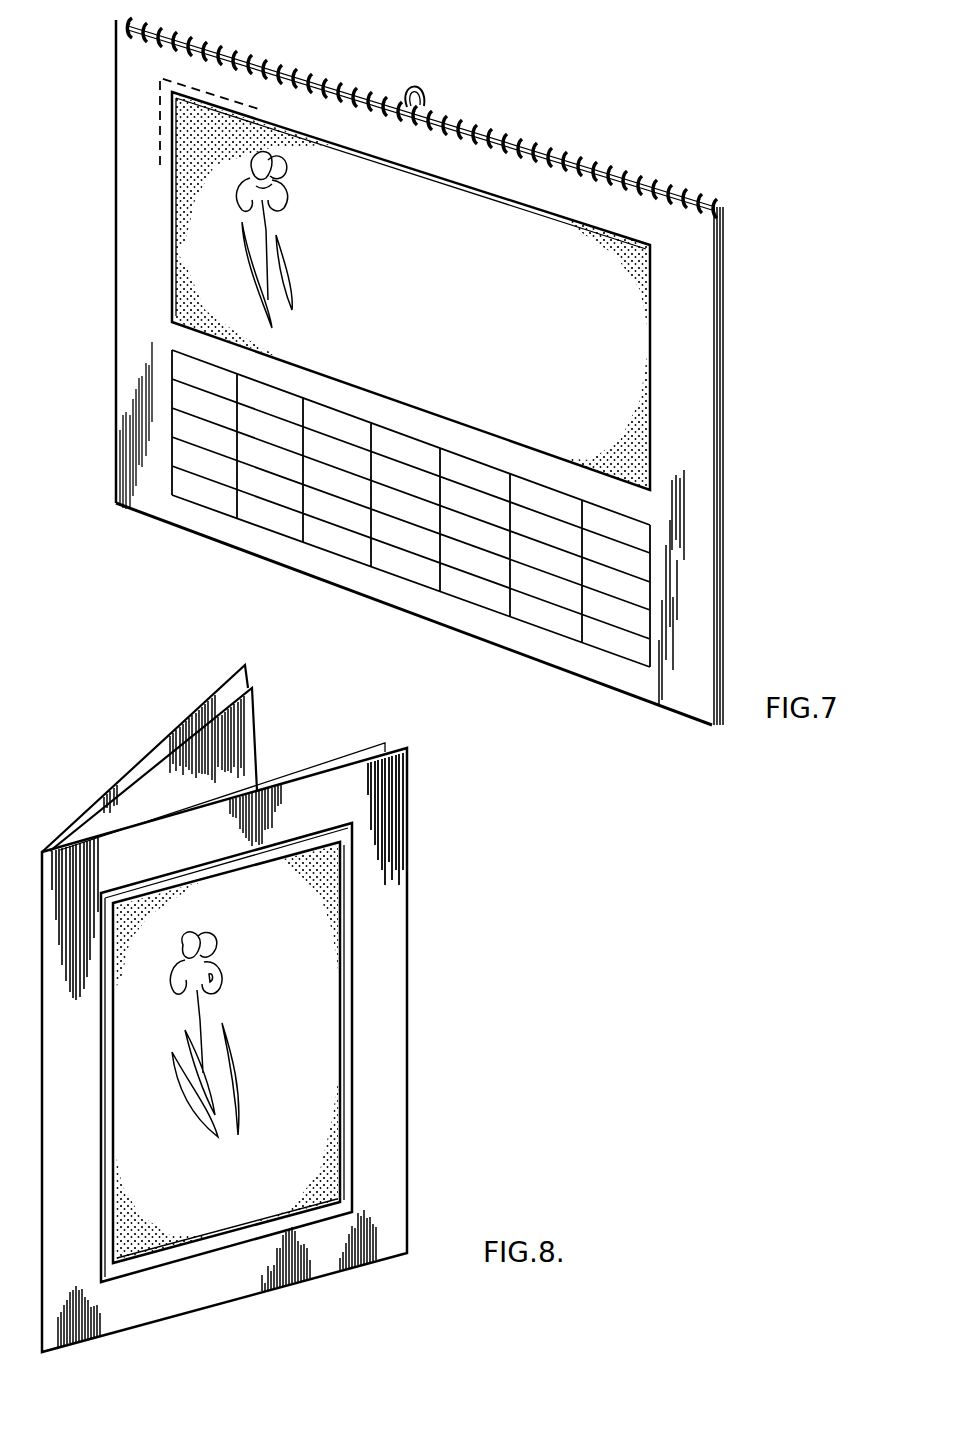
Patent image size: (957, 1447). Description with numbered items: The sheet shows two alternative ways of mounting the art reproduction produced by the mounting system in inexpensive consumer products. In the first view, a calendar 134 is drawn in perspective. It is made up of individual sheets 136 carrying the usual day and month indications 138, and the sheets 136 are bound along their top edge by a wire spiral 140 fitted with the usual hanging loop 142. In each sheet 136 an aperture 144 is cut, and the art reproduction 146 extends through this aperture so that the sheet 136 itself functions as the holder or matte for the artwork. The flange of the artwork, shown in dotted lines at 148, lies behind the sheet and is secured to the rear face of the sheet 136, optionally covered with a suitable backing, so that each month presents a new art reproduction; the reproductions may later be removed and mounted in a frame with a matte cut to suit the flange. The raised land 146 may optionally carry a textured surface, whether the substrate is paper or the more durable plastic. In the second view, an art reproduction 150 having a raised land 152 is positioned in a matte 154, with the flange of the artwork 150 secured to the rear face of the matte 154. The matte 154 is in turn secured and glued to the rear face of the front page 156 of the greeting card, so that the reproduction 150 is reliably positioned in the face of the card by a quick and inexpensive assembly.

In FIG. 7, the calendar 134 is at (735, 402).
In FIG. 7, the individual sheets 136 is at (688, 695).
In FIG. 7, the day and month indications 138 is at (270, 492).
In FIG. 7, the wire spiral 140 is at (535, 135).
In FIG. 7, the hanging loop 142 is at (420, 82).
In FIG. 7, the aperture 144 is at (652, 283).
In FIG. 7, the art reproduction 146 is at (600, 258).
In FIG. 7, the flange 148 is at (158, 108).
In FIG. 8, the art reproduction 150 is at (318, 968).
In FIG. 8, the raised land 152 is at (315, 1070).
In FIG. 8, the matte 154 is at (320, 842).
In FIG. 8, the front page 156 is at (383, 1146).